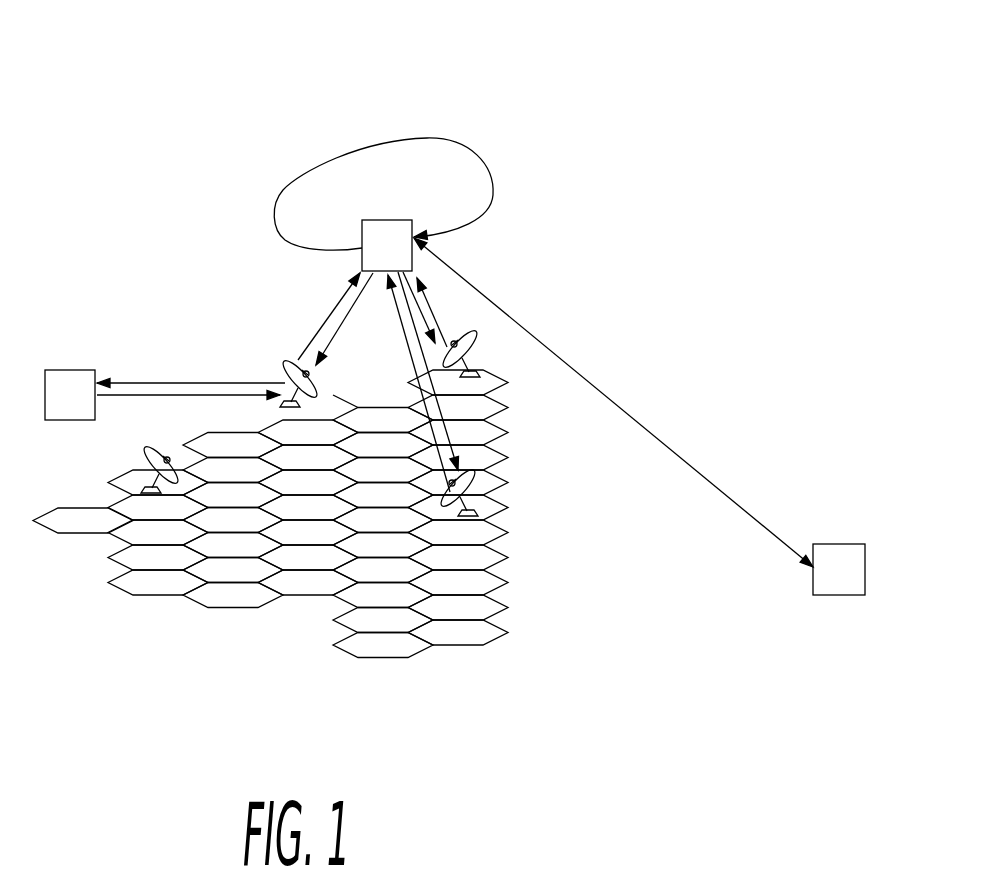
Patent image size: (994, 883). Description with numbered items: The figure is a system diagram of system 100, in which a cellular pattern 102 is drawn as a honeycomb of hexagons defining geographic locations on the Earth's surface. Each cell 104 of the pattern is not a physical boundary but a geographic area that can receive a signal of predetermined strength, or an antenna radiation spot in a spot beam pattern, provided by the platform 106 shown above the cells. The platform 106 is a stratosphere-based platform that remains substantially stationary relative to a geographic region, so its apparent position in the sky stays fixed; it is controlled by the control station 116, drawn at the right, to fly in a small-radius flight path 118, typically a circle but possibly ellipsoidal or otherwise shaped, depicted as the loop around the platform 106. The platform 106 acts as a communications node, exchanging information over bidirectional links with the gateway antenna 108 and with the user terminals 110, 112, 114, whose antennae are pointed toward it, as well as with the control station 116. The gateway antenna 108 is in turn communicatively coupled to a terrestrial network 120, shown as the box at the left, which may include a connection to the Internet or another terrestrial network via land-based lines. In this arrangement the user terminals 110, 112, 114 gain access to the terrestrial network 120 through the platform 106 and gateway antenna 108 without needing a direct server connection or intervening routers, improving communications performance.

The system 100 is at (412, 115).
The cellular pattern 102 is at (513, 595).
The cell 104 is at (232, 592).
The platform 106 is at (382, 213).
The gateway antenna 108 is at (283, 366).
The user terminal 110 is at (480, 483).
The user terminal 112 is at (470, 348).
The user terminal 114 is at (143, 460).
The control station 116 is at (837, 542).
The flight path 118 is at (283, 187).
The terrestrial network 120 is at (68, 368).